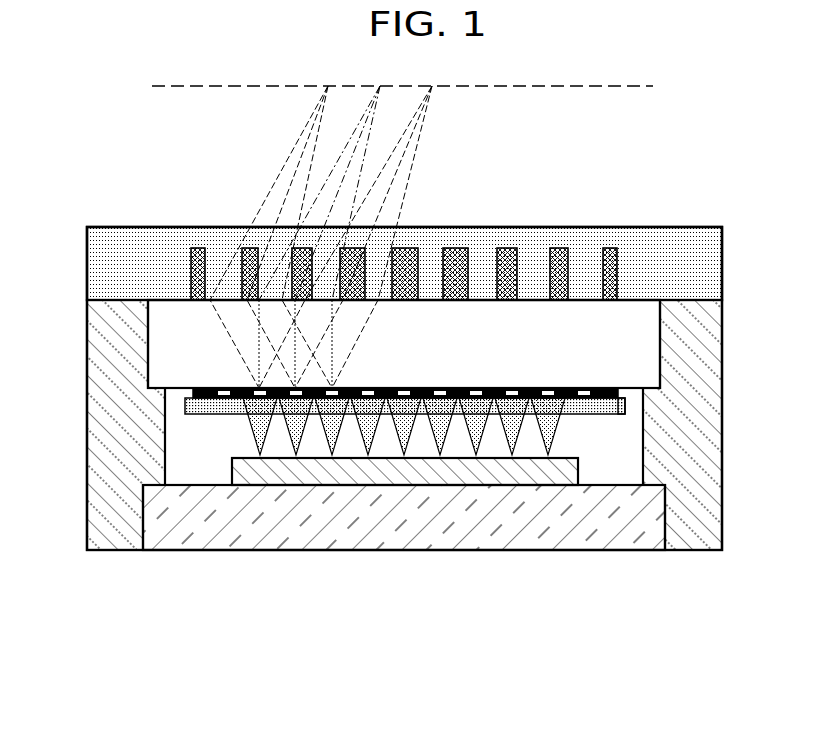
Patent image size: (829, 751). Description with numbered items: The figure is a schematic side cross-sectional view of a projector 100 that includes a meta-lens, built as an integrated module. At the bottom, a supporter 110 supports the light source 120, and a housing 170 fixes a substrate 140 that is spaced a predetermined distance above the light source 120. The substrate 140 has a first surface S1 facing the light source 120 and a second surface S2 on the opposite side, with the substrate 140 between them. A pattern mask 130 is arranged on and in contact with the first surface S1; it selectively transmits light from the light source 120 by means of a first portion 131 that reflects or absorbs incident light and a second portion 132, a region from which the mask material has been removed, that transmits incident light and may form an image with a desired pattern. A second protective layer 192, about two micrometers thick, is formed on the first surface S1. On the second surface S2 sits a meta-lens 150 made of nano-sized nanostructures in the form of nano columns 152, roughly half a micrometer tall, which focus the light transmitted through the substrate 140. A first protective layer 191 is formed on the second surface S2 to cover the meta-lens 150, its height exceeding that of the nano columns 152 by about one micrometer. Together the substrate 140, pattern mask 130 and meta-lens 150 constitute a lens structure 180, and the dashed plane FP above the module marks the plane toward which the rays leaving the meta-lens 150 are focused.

The projector 100 is at (714, 148).
The fingerprint / finger contact plane FP is at (180, 86).
The supporter 110 is at (425, 535).
The light source 120 is at (502, 476).
The pattern mask 130 is at (386, 515).
The first portion 131 is at (200, 400).
The second portion 132 is at (218, 402).
The substrate 140 is at (640, 308).
The meta-lens 150 is at (440, 231).
The nano columns 152 is at (250, 247).
The housing 170 is at (703, 458).
The lens structure 180 is at (404, 281).
The first protective layer 191 is at (708, 240).
The second protective layer 192 is at (614, 407).
The first surface S1 is at (517, 387).
The second surface S2 is at (540, 300).